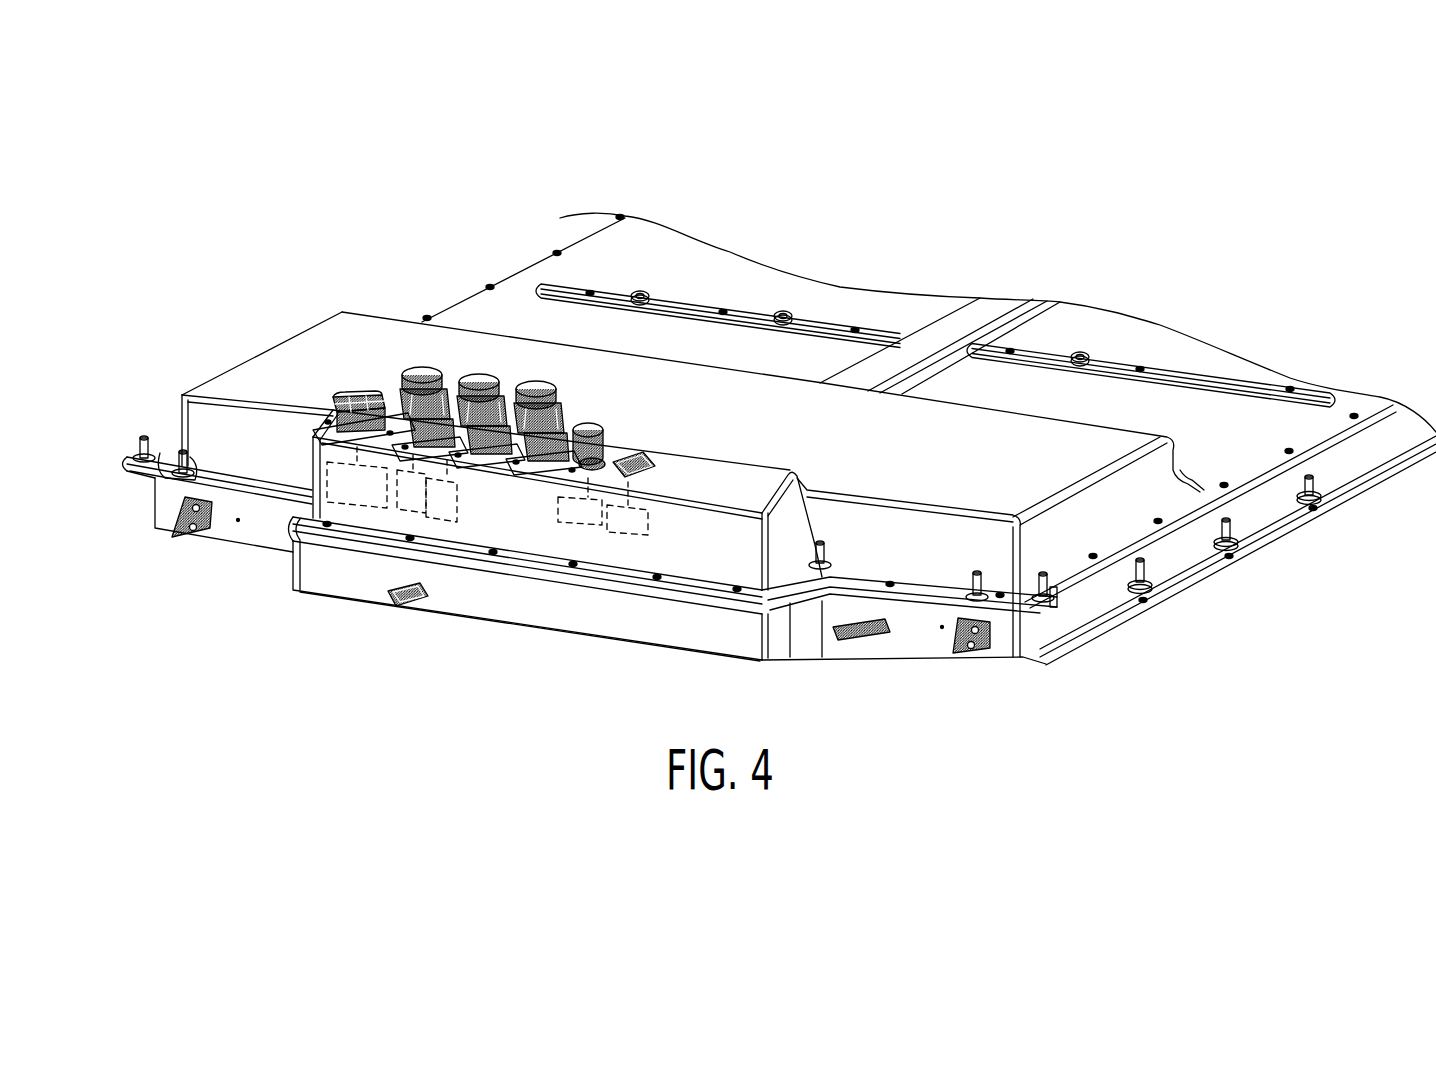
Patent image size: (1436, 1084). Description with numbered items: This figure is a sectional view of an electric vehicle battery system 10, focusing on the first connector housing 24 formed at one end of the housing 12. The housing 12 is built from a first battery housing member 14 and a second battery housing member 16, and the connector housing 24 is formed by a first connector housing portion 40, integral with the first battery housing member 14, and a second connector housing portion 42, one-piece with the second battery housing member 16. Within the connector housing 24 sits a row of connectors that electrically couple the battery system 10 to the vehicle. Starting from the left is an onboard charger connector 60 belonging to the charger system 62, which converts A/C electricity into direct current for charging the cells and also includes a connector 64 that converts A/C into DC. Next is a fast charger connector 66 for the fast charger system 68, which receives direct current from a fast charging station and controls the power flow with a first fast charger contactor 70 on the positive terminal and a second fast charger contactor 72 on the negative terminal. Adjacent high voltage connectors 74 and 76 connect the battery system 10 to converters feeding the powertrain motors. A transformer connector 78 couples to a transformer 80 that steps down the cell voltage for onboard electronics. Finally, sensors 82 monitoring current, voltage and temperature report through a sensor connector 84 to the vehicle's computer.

The electric vehicle battery system 10 is at (405, 248).
The housing 12 is at (548, 243).
The first battery housing member 14 is at (950, 547).
The second battery housing member 16 is at (1027, 640).
The first connector housing 24 is at (502, 712).
The first connector housing portion 40 is at (790, 550).
The second connector housing portion 42 is at (773, 640).
The onboard charger connector 60 is at (358, 392).
The charger system 62 is at (258, 593).
The connector 64 is at (357, 507).
The fast charger connector 66 is at (418, 368).
The fast charger system 68 is at (413, 607).
The first fast charger contactor 70 is at (413, 512).
The second fast charger contactor 72 is at (457, 506).
The high voltage connector 74 is at (472, 378).
The high voltage connector 76 is at (538, 386).
The transformer connector 78 is at (588, 422).
The transformer 80 is at (570, 526).
The sensors 82 is at (628, 531).
The sensor connector 84 is at (632, 452).